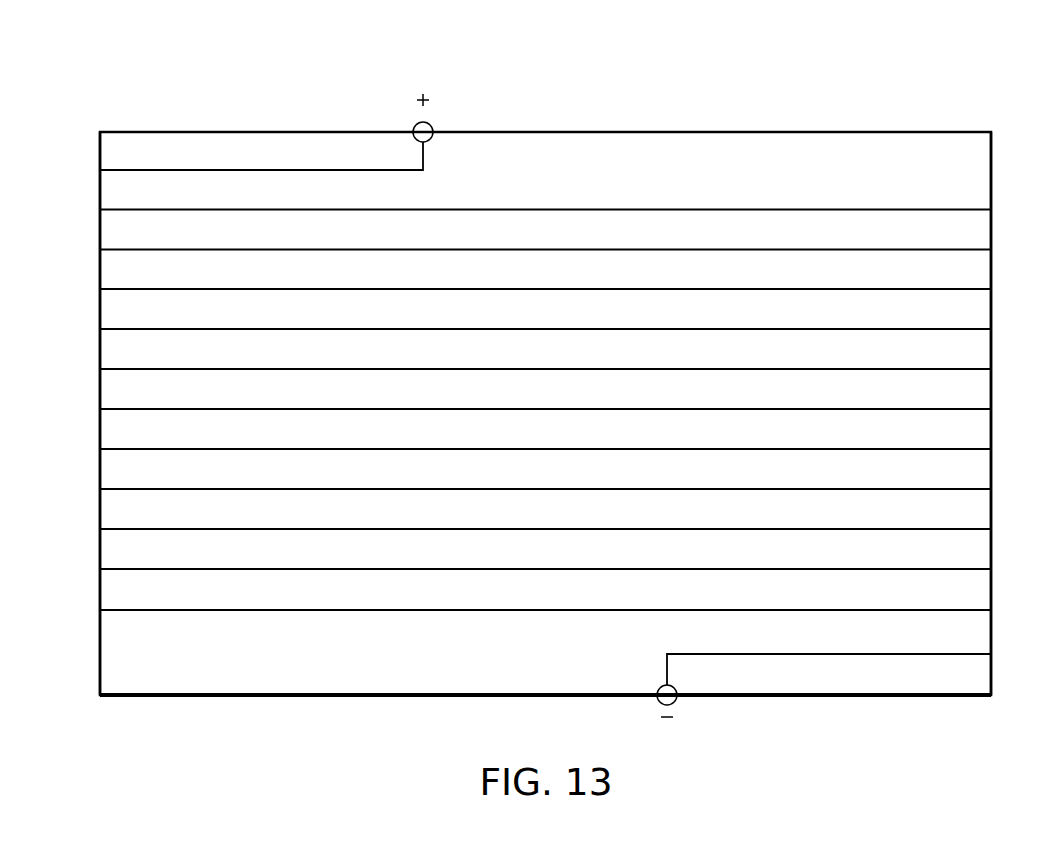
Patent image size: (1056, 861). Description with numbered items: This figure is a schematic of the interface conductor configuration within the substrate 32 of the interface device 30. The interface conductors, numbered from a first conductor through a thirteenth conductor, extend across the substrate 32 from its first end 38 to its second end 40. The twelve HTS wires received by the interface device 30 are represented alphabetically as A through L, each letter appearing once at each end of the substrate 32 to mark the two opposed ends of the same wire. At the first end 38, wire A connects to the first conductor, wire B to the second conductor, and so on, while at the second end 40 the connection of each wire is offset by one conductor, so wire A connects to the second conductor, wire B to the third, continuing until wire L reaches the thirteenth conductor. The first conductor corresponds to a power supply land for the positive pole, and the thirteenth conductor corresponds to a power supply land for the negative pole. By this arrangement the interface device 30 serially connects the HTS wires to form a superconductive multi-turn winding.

The interface device 30 is at (571, 80).
The substrate 32 is at (222, 683).
The first end 38 is at (100, 665).
The second end 40 is at (992, 679).